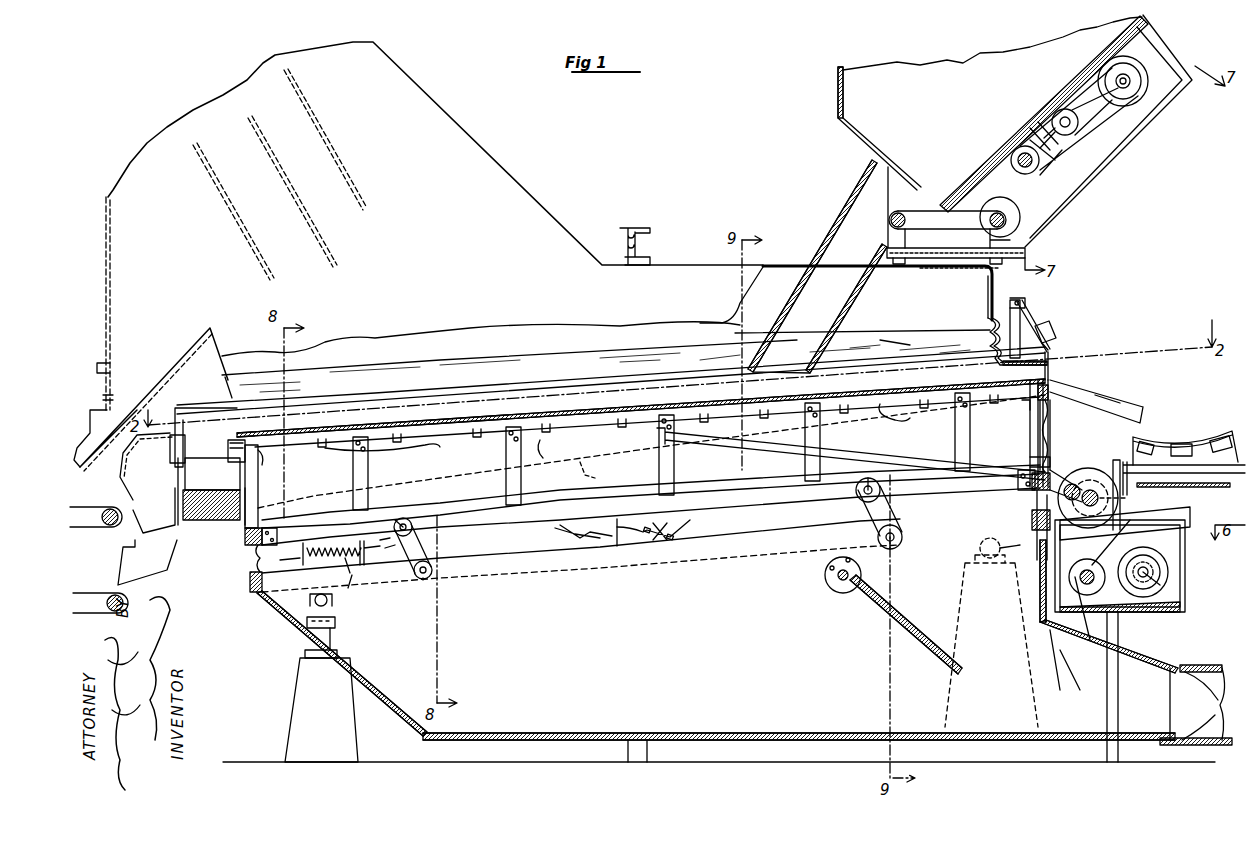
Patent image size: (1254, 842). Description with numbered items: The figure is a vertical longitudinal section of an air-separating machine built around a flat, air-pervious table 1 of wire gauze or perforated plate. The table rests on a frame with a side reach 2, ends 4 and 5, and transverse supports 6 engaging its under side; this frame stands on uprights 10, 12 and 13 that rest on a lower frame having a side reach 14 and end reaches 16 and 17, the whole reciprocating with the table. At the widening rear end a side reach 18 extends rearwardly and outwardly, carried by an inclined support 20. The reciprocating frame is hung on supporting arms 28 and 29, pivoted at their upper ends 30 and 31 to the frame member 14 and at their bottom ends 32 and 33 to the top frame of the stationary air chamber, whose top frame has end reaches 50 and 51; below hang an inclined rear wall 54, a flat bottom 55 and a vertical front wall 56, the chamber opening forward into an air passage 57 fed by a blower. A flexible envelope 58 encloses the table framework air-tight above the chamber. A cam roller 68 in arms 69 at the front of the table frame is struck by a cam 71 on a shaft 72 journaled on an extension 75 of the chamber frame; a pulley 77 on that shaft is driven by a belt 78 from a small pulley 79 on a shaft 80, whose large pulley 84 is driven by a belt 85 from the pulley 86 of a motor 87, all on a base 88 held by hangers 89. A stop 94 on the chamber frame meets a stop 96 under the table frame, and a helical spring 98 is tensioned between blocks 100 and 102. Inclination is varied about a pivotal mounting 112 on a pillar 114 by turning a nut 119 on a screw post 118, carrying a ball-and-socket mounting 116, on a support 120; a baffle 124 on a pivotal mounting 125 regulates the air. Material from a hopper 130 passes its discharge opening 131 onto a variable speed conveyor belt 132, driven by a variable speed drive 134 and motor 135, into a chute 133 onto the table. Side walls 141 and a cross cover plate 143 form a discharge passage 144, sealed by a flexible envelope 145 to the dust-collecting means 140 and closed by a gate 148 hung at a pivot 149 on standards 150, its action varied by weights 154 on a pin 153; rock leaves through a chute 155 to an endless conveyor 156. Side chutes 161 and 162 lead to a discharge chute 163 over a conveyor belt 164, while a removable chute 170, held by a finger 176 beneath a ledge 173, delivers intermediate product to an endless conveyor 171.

The table 1 is at (568, 392).
The side reach 2 is at (899, 419).
The frame end 4 is at (1030, 412).
The frame end 5 is at (267, 465).
The transversely-disposed support 6 is at (436, 464).
The upright 10 is at (940, 442).
The upright 12 is at (1038, 433).
The upright 13 is at (258, 485).
The side reach 14 is at (776, 512).
The end reach 16 is at (1030, 492).
The end reach 17 is at (250, 548).
The side reach 18 is at (548, 451).
The support 20 is at (369, 474).
The supporting arm 28 is at (430, 548).
The supporting arm 29 is at (860, 516).
The upper end pivot 30 is at (403, 518).
The upper end pivot 31 is at (872, 482).
The bottom end pivot 32 is at (412, 593).
The bottom end pivot 33 is at (895, 548).
The end reach 50 is at (1032, 514).
The end reach 51 is at (250, 583).
The rear side wall 54 is at (378, 695).
The bottom 55 is at (766, 734).
The front wall 56 is at (1040, 586).
The air passage 57 is at (1170, 662).
The flexible envelope 58 is at (1052, 435).
The cam roller 68 is at (1088, 490).
The arm 69 is at (1070, 484).
The cam 71 is at (1112, 521).
The shaft 72 is at (1123, 498).
The extension 75 is at (1160, 490).
The pulley 77 is at (1098, 470).
The belt 78 is at (1055, 552).
The small pulley 79 is at (1080, 600).
The shaft 80 is at (1080, 566).
The large pulley 84 is at (1075, 590).
The belt 85 is at (1122, 618).
The pulley 86 is at (1160, 574).
The motor 87 is at (1165, 590).
The base 88 is at (1160, 615).
The hanger 89 is at (1172, 562).
The stop 94 is at (665, 529).
The stop 96 is at (560, 532).
The helical spring 98 is at (352, 580).
The block 100 is at (296, 568).
The block 102 is at (368, 563).
The pivotal mounting 112 is at (960, 575).
The pillar 114 is at (1000, 752).
The ball-and-socket mounting 116 is at (305, 605).
The screw post 118 is at (310, 650).
The nut 119 is at (300, 625).
The support 120 is at (298, 680).
The baffle 124 is at (910, 625).
The pivotal mounting 125 is at (838, 592).
The hopper 130 is at (830, 91).
The discharge opening 131 is at (930, 195).
The variable speed conveyor belt 132 is at (928, 232).
The chute 133 is at (840, 236).
The variable speed drive 134 is at (1040, 162).
The motor 135 is at (1130, 118).
The dust-collecting means 140 is at (478, 147).
The side wall 141 is at (895, 340).
The cross cover plate 143 is at (1000, 352).
The discharge passage 144 is at (1050, 368).
The flexible air-pervious envelope 145 is at (218, 385).
The gate 148 is at (1070, 376).
The pivot 149 is at (1025, 296).
The standard 150 is at (1030, 318).
The pin 153 is at (1056, 330).
The weight 154 is at (1055, 342).
The chute 155 is at (1115, 396).
The endless conveyor 156 is at (1215, 432).
The chute 161 is at (598, 474).
The chute 162 is at (162, 490).
The discharge chute 163 is at (130, 545).
The conveyor belt 164 is at (106, 588).
The removable chute 170 is at (140, 460).
The endless conveyor 171 is at (100, 505).
The ledge 173 is at (228, 446).
The finger 176 is at (220, 468).